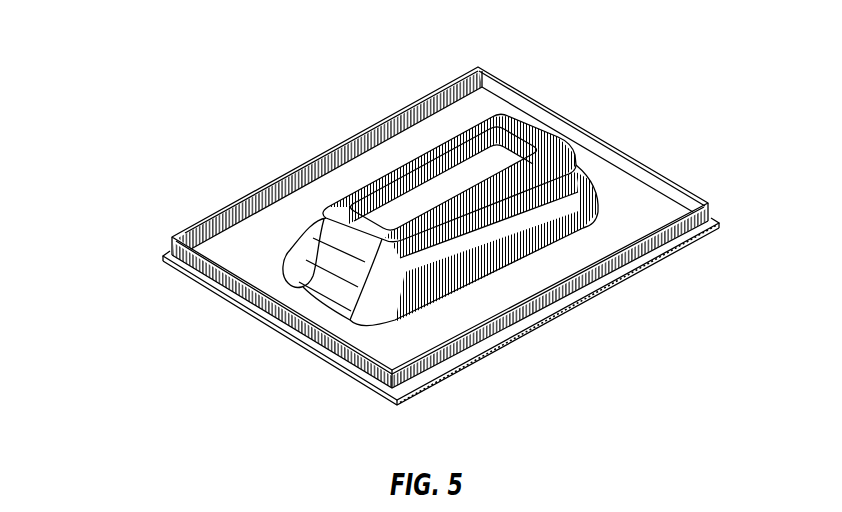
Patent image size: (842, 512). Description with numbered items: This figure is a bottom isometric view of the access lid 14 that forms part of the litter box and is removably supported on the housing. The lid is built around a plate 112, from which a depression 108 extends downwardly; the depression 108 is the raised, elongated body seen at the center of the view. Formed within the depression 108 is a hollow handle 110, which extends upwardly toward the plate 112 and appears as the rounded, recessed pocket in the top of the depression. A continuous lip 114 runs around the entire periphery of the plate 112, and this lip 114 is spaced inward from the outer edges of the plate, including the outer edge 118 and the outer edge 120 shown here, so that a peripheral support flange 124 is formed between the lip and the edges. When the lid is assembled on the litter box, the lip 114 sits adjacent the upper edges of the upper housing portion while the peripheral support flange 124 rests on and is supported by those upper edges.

The access lid 14 is at (682, 262).
The depression 108 is at (493, 273).
The hollow handle 110 is at (512, 150).
The plate 112 is at (638, 193).
The continuous lip 114 is at (238, 204).
The outer edge 118 is at (307, 348).
The outer edge 120 is at (597, 293).
The peripheral support flange 124 is at (183, 268).